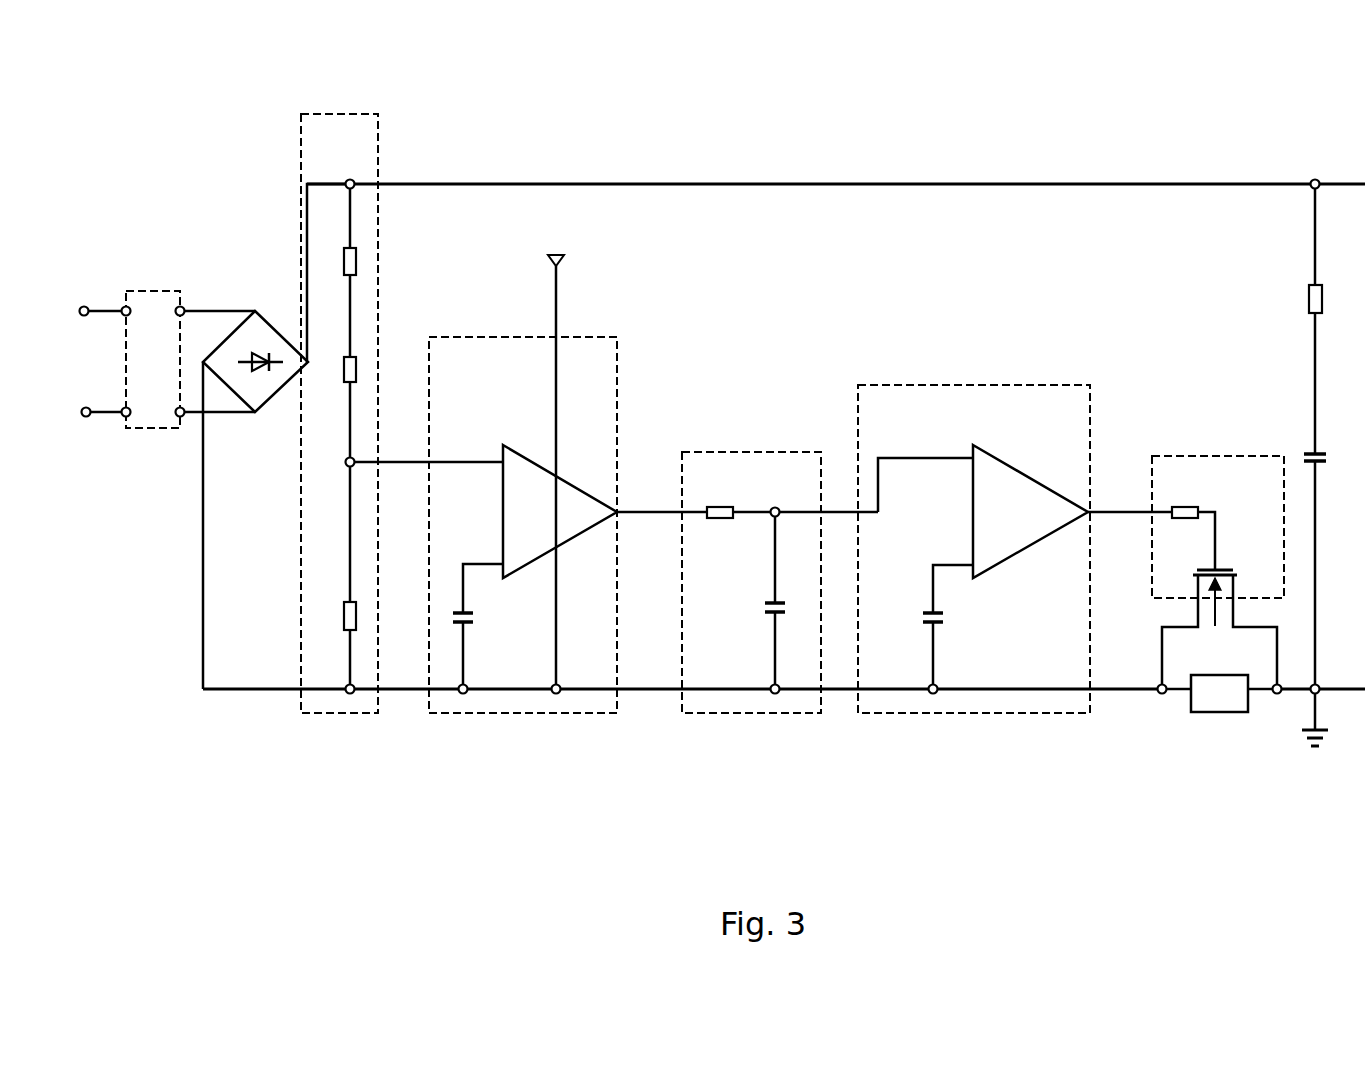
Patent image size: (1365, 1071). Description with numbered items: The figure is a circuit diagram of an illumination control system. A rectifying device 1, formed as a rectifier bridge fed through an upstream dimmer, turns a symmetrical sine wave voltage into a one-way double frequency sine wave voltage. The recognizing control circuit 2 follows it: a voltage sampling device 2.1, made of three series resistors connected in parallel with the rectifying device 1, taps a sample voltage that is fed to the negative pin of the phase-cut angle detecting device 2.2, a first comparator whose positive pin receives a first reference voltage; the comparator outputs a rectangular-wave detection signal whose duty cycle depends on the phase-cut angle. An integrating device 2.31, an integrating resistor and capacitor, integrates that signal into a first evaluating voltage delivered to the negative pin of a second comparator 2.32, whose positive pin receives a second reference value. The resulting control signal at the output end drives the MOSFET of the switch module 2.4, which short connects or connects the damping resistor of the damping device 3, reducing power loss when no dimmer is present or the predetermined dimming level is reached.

The rectifying device 1 is at (213, 278).
The recognizing control circuit 2 is at (778, 168).
The damping device 3 is at (1315, 168).
The voltage sampling device 2.1 is at (345, 732).
The phase-cut angle detecting device 2.2 is at (530, 732).
The integrating device 2.31 is at (752, 732).
The second comparator 2.32 is at (982, 732).
The switch module 2.4 is at (1150, 612).